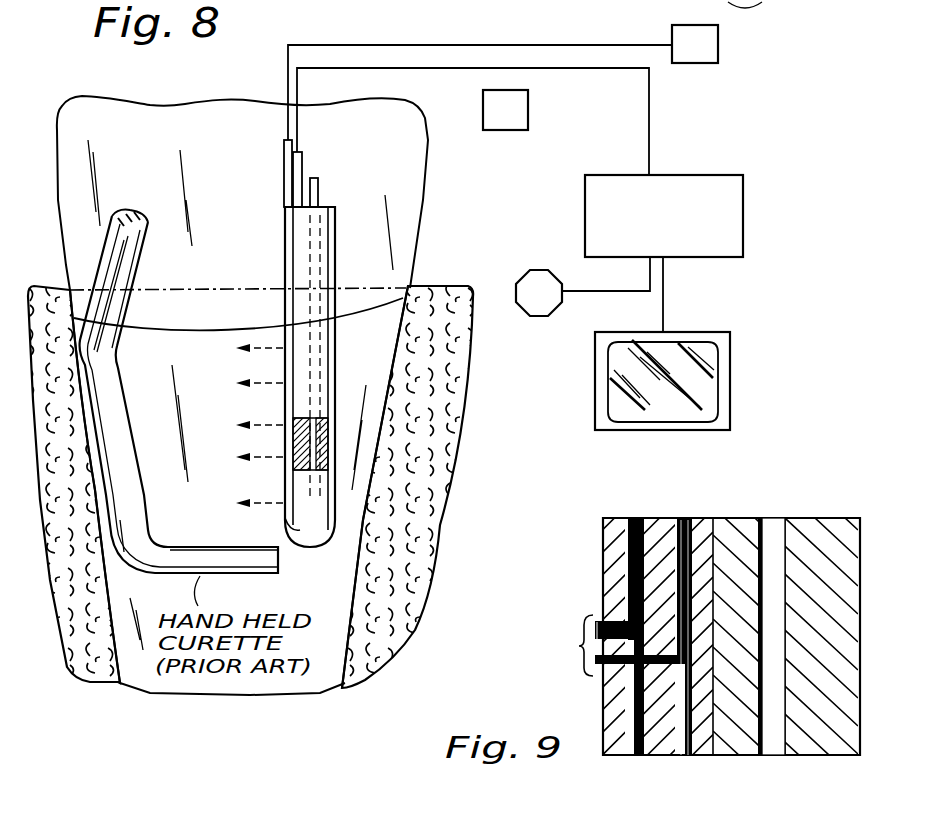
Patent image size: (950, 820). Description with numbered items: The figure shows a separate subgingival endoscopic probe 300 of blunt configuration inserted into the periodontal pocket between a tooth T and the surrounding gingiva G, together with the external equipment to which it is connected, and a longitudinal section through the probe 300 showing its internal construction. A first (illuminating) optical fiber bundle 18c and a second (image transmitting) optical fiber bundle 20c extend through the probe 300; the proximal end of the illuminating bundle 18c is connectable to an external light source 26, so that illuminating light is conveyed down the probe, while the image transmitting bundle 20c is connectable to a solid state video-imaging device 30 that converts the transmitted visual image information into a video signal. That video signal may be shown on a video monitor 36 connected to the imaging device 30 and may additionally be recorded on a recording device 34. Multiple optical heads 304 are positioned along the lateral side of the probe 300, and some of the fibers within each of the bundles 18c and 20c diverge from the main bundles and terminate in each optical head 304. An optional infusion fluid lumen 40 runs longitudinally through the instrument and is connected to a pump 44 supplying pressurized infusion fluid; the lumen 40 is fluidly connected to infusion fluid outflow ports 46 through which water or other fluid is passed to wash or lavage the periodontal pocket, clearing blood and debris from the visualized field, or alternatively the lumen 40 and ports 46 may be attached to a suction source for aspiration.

In FIG. 8, the tooth T is at (96, 112).
In FIG. 8, the gingiva (gum tissue) G is at (420, 470).
In FIG. 8, the subgingival endoscopic probe 300 is at (335, 250).
In FIG. 8, the first (illuminating) optical fiber bundle 18c is at (284, 153).
In FIG. 9, the first (illuminating) optical fiber bundle 18c is at (604, 622).
In FIG. 8, the second (image transmitting) optical fiber bundle 20c is at (303, 169).
In FIG. 9, the second (image transmitting) optical fiber bundle 20c is at (600, 672).
In FIG. 8, the infusion fluid lumen 40 is at (319, 191).
In FIG. 9, the infusion fluid lumen 40 is at (770, 518).
In FIG. 8, the infusion fluid outflow ports 46 is at (283, 503).
In FIG. 8, the external light source 26 is at (718, 58).
In FIG. 8, the pump 44 is at (528, 108).
In FIG. 8, the video-imaging device 30 is at (743, 210).
In FIG. 8, the video monitor 36 is at (542, 316).
In FIG. 8, the recording device 34 is at (713, 390).
In FIG. 9, the optical head 304 is at (553, 645).